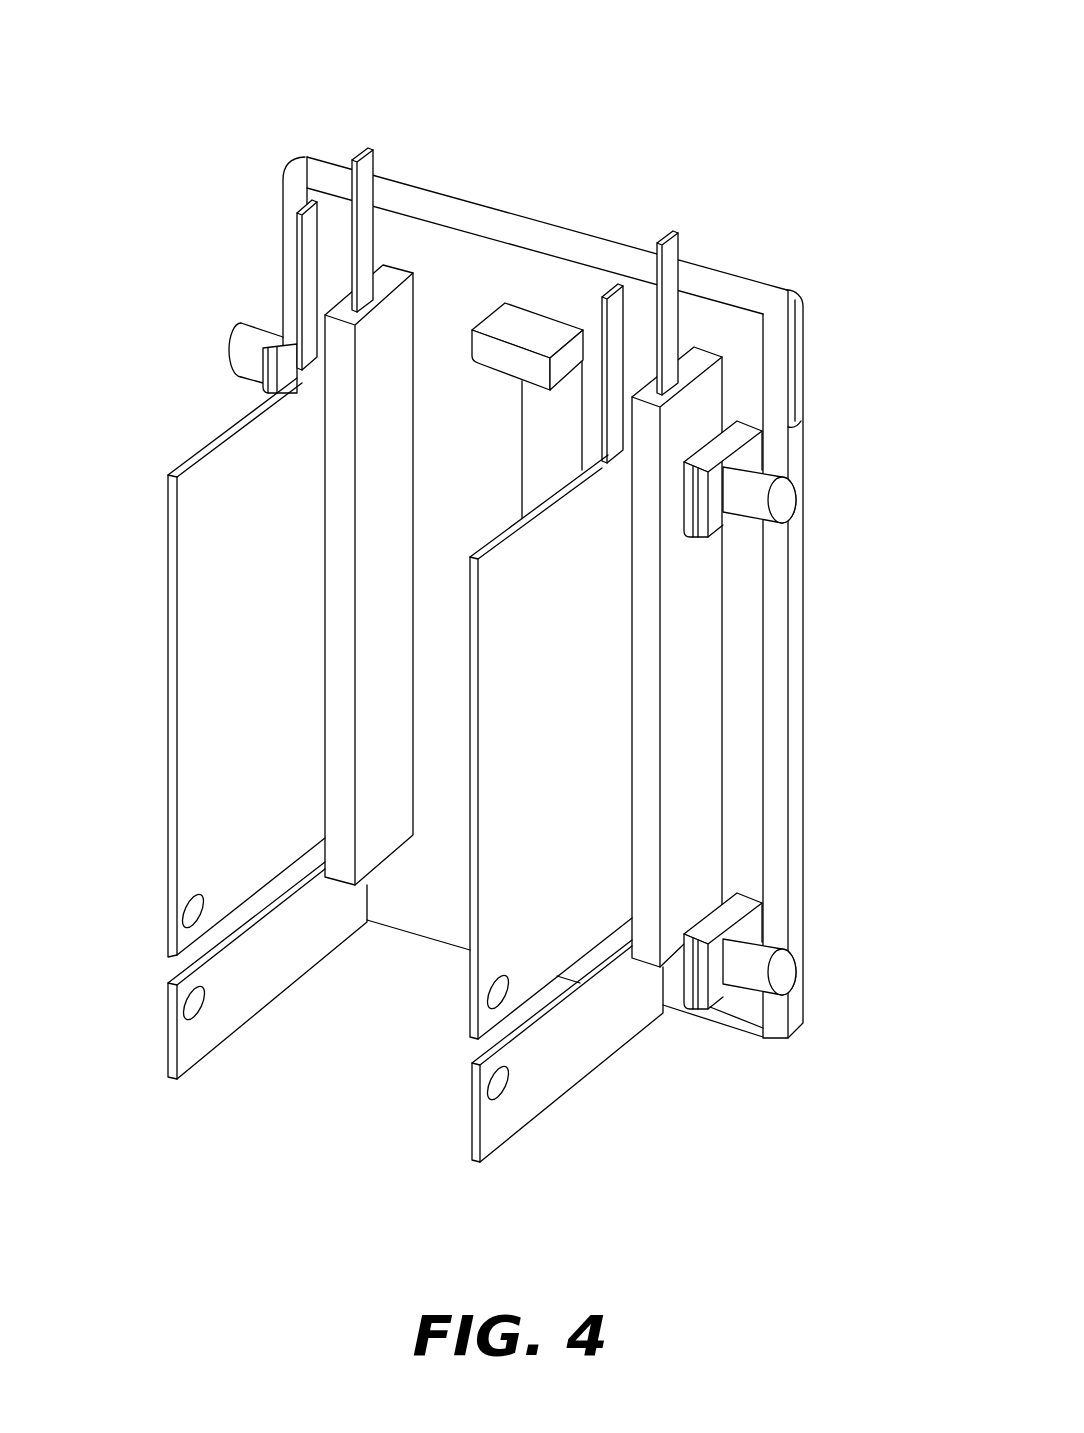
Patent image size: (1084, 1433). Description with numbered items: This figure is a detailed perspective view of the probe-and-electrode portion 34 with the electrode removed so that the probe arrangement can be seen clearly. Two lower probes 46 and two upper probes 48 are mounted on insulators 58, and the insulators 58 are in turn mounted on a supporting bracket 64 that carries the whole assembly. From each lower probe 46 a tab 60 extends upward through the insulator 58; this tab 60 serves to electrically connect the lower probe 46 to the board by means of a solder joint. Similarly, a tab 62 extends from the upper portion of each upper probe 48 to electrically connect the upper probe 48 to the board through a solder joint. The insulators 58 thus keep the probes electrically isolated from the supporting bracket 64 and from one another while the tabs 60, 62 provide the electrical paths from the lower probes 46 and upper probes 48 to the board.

The probe-and-electrode portion 34 is at (800, 360).
The lower probe 46 is at (172, 1017).
The upper probe 48 is at (168, 585).
The insulator 58 is at (397, 312).
The tab 60 is at (363, 163).
The tab 62 is at (308, 240).
The supporting bracket 64 is at (557, 230).